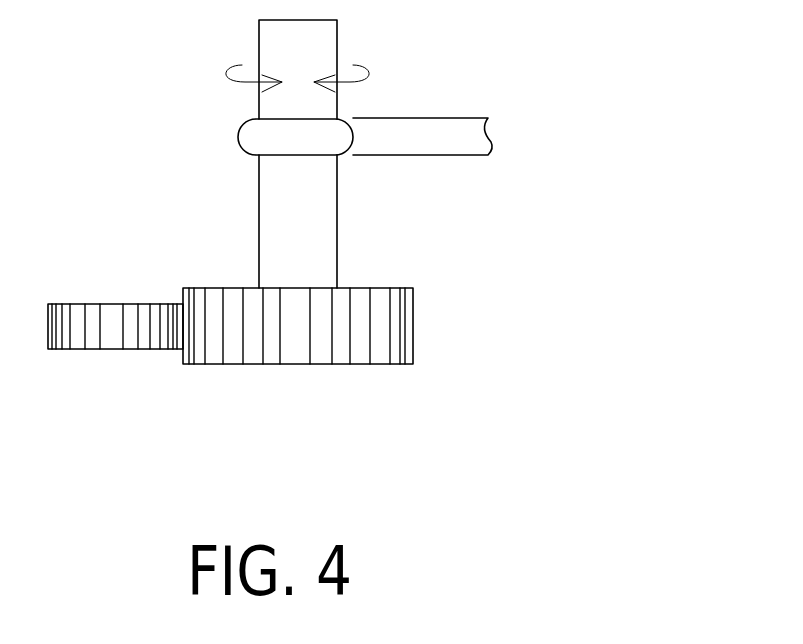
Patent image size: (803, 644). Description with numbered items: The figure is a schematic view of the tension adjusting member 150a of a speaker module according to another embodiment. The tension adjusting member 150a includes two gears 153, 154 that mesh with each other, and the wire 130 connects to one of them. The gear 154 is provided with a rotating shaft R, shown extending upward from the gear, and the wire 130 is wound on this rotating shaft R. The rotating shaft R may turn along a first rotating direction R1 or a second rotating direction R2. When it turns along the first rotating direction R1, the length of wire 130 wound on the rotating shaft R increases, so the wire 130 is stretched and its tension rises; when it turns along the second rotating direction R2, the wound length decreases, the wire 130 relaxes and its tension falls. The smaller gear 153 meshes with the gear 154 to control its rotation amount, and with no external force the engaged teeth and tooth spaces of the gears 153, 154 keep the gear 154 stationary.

The rotating shaft R is at (278, 217).
The first rotating direction R1 is at (231, 74).
The second rotating direction R2 is at (366, 74).
The wire 130 is at (438, 138).
The tension adjusting member 150a is at (230, 404).
The gear 153 is at (115, 377).
The gear 154 is at (250, 348).